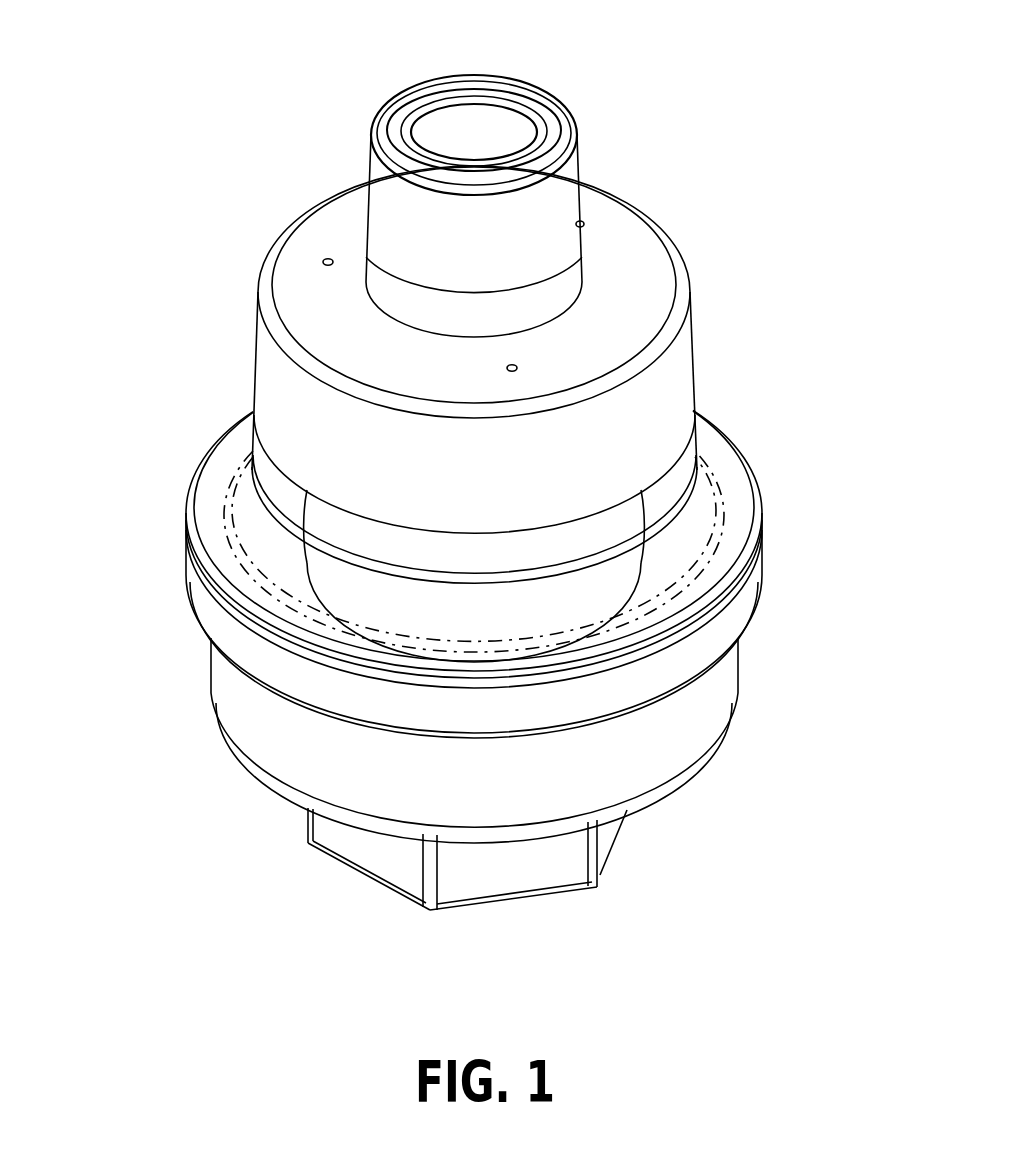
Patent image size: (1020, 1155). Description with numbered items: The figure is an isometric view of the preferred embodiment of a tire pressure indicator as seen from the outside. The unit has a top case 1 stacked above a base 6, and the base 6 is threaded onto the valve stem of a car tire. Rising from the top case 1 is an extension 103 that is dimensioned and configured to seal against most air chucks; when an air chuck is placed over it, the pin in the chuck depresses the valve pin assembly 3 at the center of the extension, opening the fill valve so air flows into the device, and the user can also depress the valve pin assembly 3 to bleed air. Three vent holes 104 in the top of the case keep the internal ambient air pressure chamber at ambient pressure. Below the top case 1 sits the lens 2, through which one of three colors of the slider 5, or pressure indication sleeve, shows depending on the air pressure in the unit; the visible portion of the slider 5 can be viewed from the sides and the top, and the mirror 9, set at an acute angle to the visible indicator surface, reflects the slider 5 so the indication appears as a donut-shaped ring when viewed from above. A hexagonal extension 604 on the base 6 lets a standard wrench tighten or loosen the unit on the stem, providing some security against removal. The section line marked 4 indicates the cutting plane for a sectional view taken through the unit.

The top case 1 is at (552, 374).
The lens 2 is at (378, 513).
The valve pin assembly 3 is at (534, 83).
The section line 4- 4 is at (165, 527).
The slider 5 is at (584, 542).
The base 6 is at (519, 748).
The mirror 9 is at (530, 574).
The extension in top case 103 is at (572, 206).
The vent holes in top case 104 is at (357, 273).
The hexagonal extension 604 is at (376, 880).